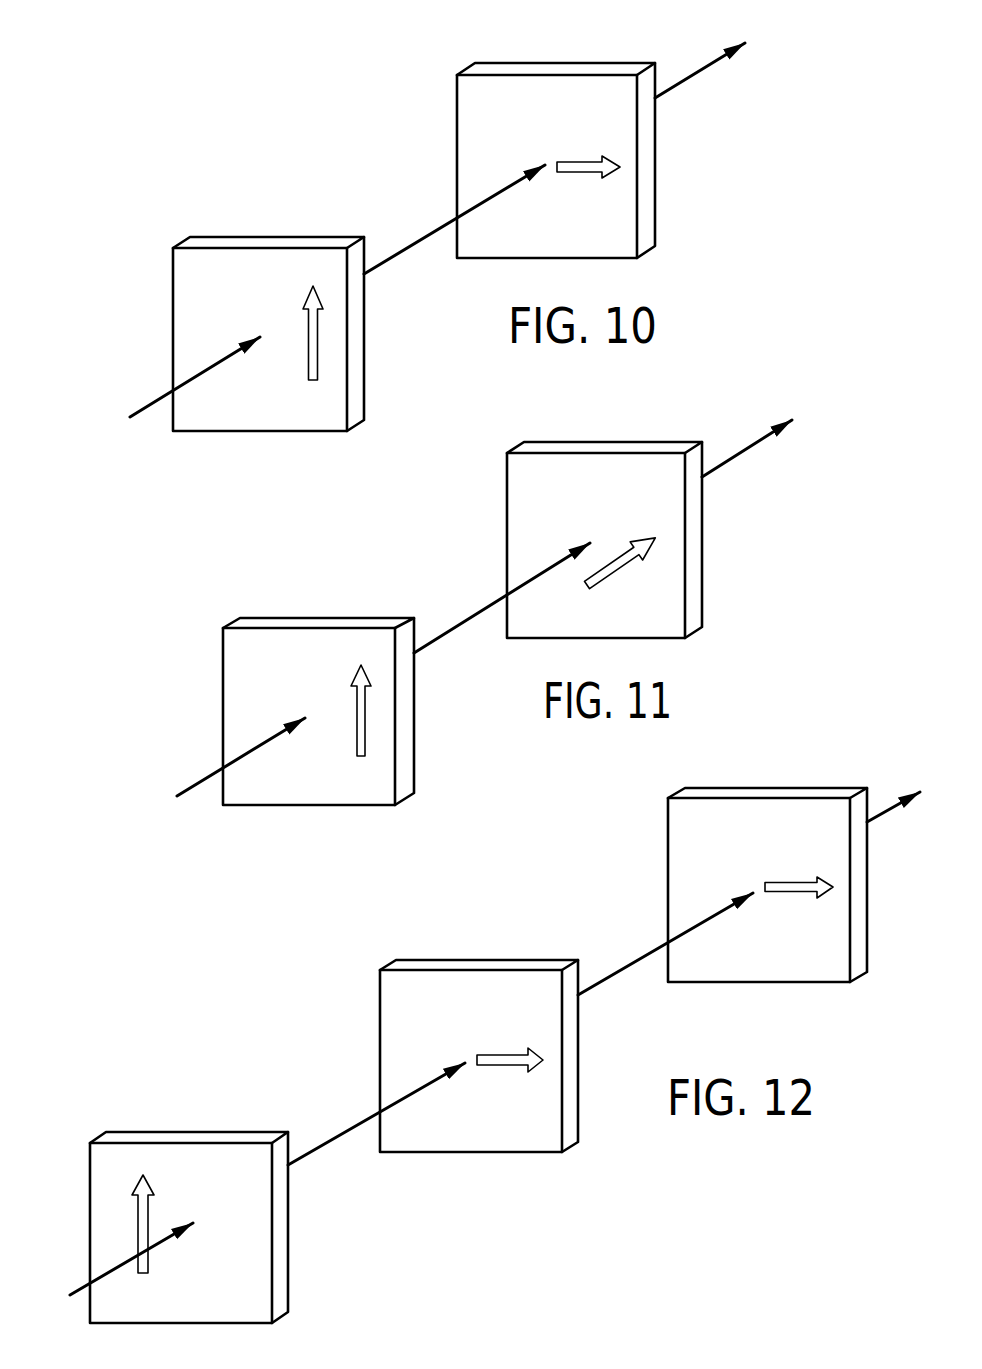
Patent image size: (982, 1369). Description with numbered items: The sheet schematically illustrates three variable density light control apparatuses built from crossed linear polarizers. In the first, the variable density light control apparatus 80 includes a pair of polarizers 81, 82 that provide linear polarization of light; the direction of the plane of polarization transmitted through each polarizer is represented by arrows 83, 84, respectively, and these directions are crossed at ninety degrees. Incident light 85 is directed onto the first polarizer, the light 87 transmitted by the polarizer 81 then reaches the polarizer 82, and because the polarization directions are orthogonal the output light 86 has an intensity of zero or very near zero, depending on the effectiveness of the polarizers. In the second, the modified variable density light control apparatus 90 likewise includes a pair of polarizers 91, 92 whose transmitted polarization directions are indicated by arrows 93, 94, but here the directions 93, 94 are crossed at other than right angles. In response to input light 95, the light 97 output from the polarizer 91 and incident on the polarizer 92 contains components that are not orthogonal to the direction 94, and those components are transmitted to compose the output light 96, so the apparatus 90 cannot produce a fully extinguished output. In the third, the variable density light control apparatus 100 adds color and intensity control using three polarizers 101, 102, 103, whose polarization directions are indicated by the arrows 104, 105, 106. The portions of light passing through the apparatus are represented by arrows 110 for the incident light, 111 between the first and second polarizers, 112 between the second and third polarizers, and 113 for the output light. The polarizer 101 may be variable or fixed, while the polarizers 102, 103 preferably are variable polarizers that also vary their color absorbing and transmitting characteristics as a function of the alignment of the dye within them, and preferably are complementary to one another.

In FIG. 10, the variable density light control apparatus 80 is at (372, 183).
In FIG. 10, the polarizer 81 is at (218, 243).
In FIG. 10, the polarizer 82 is at (557, 63).
In FIG. 10, the arrow 83 is at (313, 381).
In FIG. 10, the arrow 84 is at (582, 172).
In FIG. 10, the incident light 85 is at (151, 404).
In FIG. 10, the output light 86 is at (690, 73).
In FIG. 10, the intermediate light beam 87 is at (435, 227).
In FIG. 11, the modified variable density light control apparatus 90 is at (422, 557).
In FIG. 11, the polarizer 91 is at (286, 620).
In FIG. 11, the polarizer 92 is at (597, 443).
In FIG. 11, the arrow 93 is at (357, 705).
In FIG. 11, the arrow 94 is at (613, 553).
In FIG. 11, the input light 95 is at (252, 752).
In FIG. 11, the output light 96 is at (732, 463).
In FIG. 11, the light 97 is at (469, 620).
In FIG. 12, the variable density light control apparatus 100 is at (542, 1193).
In FIG. 12, the polarizer 101 is at (188, 1132).
In FIG. 12, the polarizer 102 is at (467, 960).
In FIG. 12, the polarizer 103 is at (778, 790).
In FIG. 12, the arrow 104 is at (148, 1271).
In FIG. 12, the arrow 105 is at (503, 1067).
In FIG. 12, the arrow 106 is at (783, 893).
In FIG. 12, the incident light 110 is at (84, 1275).
In FIG. 12, the light 111 is at (340, 1137).
In FIG. 12, the light 112 is at (633, 963).
In FIG. 12, the output light 113 is at (885, 812).